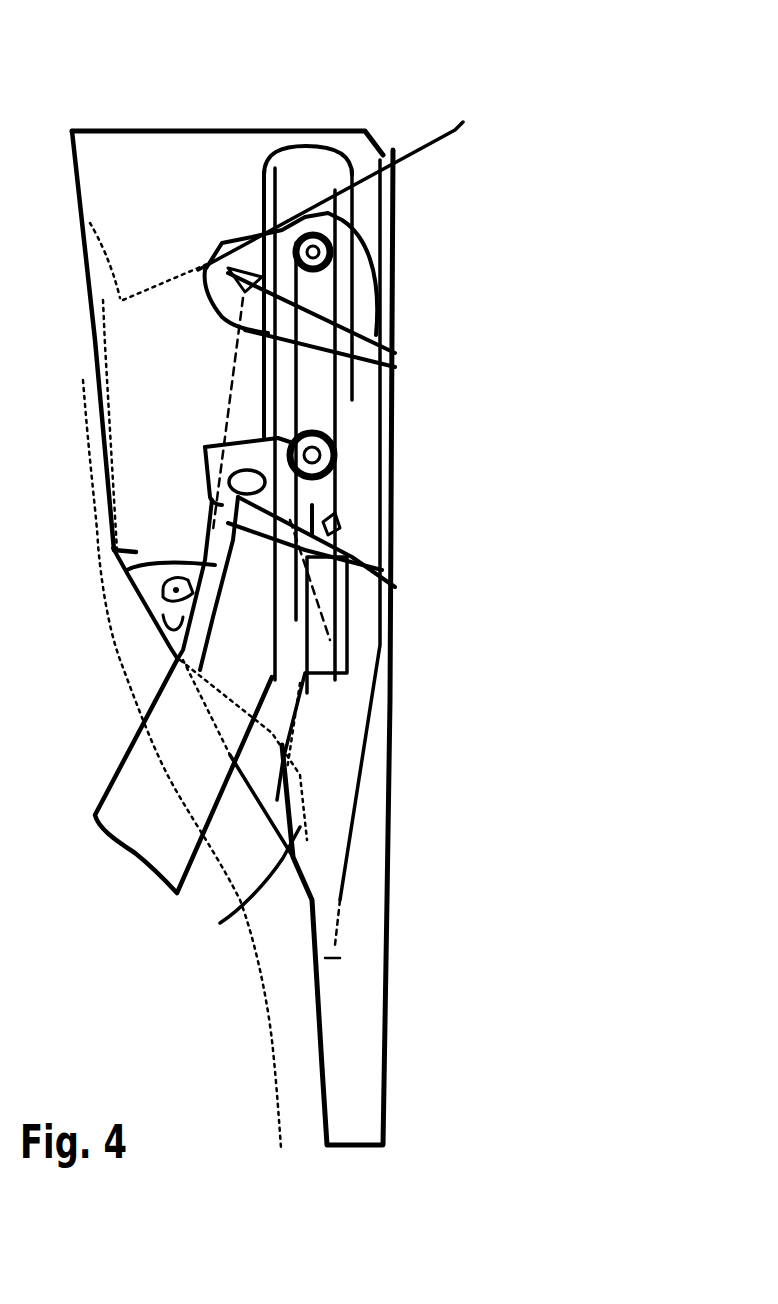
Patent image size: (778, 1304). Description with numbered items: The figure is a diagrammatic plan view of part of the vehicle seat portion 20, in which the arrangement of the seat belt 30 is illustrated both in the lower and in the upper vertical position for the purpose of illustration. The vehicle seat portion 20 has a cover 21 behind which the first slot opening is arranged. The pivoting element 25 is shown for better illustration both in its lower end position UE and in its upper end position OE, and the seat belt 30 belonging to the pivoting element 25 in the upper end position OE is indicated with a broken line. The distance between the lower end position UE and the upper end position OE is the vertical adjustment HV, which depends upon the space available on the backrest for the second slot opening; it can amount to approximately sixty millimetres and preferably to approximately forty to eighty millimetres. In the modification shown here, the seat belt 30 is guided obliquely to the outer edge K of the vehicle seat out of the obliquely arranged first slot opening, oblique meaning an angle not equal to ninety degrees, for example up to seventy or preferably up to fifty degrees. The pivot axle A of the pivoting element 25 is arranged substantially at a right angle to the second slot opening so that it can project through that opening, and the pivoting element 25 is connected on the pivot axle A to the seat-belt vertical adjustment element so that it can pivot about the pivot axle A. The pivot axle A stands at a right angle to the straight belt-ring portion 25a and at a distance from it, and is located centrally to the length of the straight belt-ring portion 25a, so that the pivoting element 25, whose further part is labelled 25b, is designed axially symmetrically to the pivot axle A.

The vehicle seat portion 20 is at (250, 131).
The cover 21 is at (183, 774).
The pivoting element 25 is at (468, 602).
The straight belt-ring portion 25a is at (393, 607).
The upper bracket part 25b is at (393, 513).
The seat belt 30 is at (307, 693).
The pivot axle A is at (322, 243).
The upper end position OE is at (316, 255).
The lower end position UE is at (316, 457).
The vertical adjustment HV is at (523, 257).
The outer edge K is at (385, 1112).